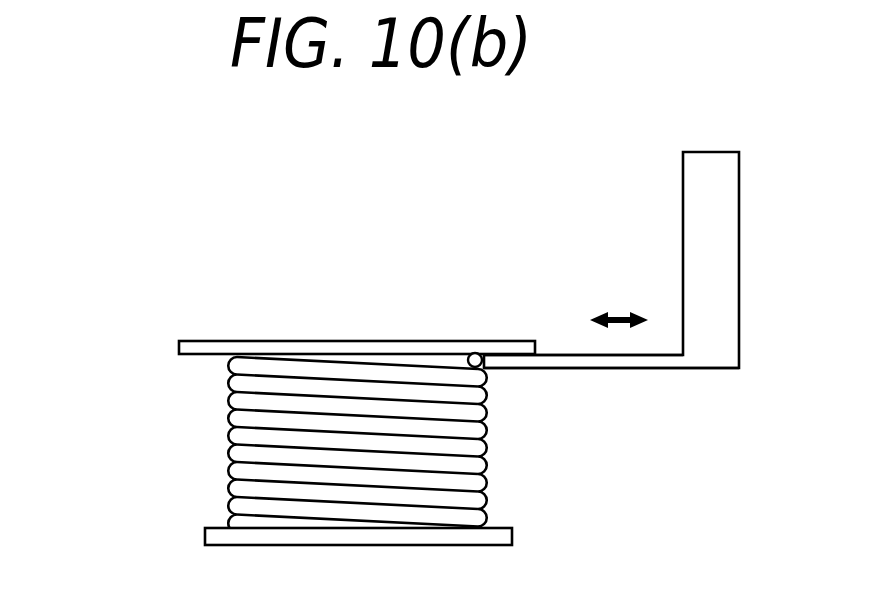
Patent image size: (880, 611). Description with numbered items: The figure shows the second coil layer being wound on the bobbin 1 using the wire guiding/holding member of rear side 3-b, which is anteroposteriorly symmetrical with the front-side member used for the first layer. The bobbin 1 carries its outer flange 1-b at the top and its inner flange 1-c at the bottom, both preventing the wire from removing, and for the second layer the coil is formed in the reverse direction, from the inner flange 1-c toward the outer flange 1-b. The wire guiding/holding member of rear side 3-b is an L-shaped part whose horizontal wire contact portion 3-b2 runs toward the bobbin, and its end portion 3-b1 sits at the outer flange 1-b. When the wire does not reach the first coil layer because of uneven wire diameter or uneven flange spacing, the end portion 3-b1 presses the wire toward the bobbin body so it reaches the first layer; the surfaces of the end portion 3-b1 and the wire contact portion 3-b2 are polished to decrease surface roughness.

The bobbin 1 is at (72, 313).
The outer flange 1-b is at (180, 347).
The inner flange 1-c is at (207, 538).
The wire guiding/holding member of rear side 3-b is at (727, 253).
The end portion 3-b1 is at (501, 353).
The wire contact portion 3-b2 is at (612, 368).